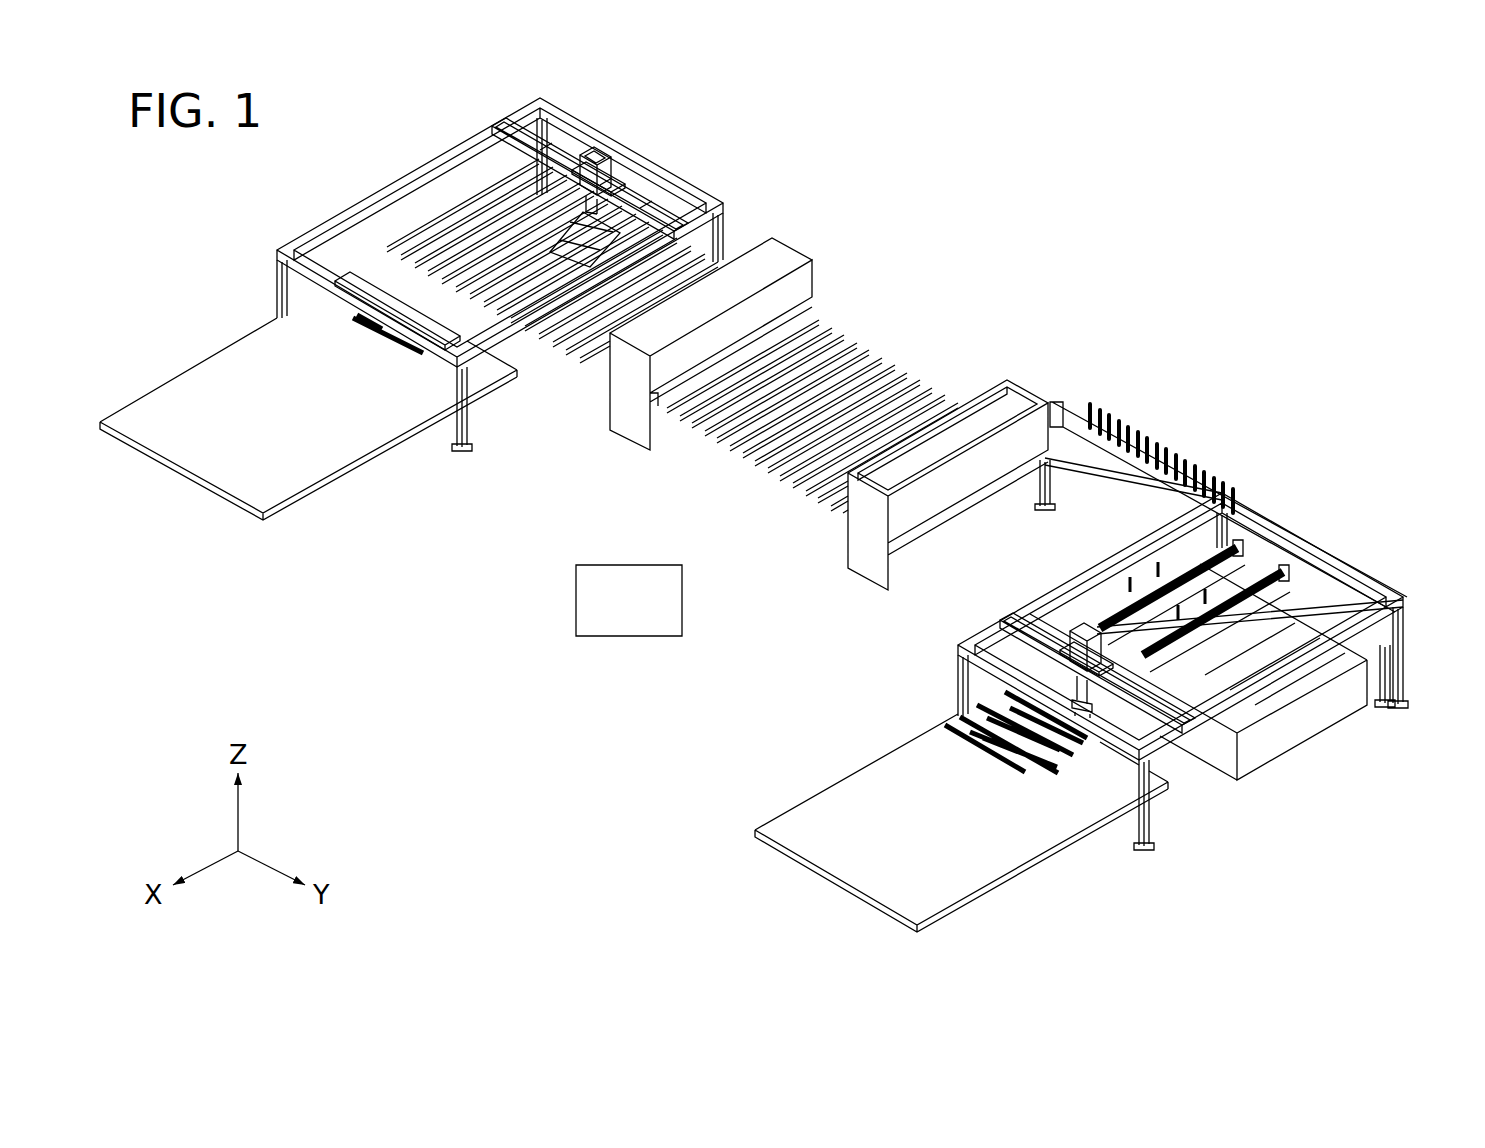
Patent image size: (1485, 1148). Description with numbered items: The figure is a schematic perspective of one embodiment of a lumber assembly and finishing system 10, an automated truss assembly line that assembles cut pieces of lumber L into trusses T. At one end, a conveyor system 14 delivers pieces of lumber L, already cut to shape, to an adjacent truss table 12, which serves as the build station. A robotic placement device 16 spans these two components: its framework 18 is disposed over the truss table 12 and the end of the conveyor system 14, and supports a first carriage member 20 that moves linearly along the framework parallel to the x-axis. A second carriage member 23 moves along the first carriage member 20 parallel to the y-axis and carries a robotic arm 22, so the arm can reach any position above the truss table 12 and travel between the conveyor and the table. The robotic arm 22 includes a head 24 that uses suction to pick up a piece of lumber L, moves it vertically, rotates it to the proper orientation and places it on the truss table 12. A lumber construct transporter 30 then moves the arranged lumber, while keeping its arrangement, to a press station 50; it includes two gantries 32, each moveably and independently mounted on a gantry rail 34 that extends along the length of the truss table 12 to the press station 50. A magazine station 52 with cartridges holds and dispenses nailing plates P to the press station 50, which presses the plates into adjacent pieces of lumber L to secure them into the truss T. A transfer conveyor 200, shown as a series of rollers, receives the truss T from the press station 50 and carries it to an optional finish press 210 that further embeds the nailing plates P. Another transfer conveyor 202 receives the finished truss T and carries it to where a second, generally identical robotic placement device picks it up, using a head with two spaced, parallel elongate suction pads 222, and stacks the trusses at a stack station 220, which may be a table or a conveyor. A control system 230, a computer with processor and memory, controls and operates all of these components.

The lumber assembly and finishing system 10 is at (1147, 192).
The truss table 12 is at (1280, 767).
The conveyor system 14 is at (1012, 885).
The robotic placement device 16 is at (1012, 600).
The framework 18 is at (1412, 647).
The first carriage member 20 is at (1050, 620).
The robotic arm 22 is at (1075, 627).
The second carriage member 23 is at (1020, 647).
The head 24 is at (1090, 705).
The lumber construct transporter 30 is at (1328, 615).
The gantry 32 is at (1262, 528).
The gantry rail 34 is at (1080, 487).
The press station 50 is at (850, 596).
The magazine station 52 is at (1178, 418).
The transfer conveyor 200 is at (885, 337).
The transfer conveyor 202 is at (583, 383).
The finish press 210 is at (802, 243).
The stack station 220 is at (332, 517).
The suction pad 222 is at (590, 267).
The control system 230 is at (633, 636).
The pieces of lumber L is at (940, 715).
The nailing plates P is at (373, 324).
The truss T is at (398, 352).